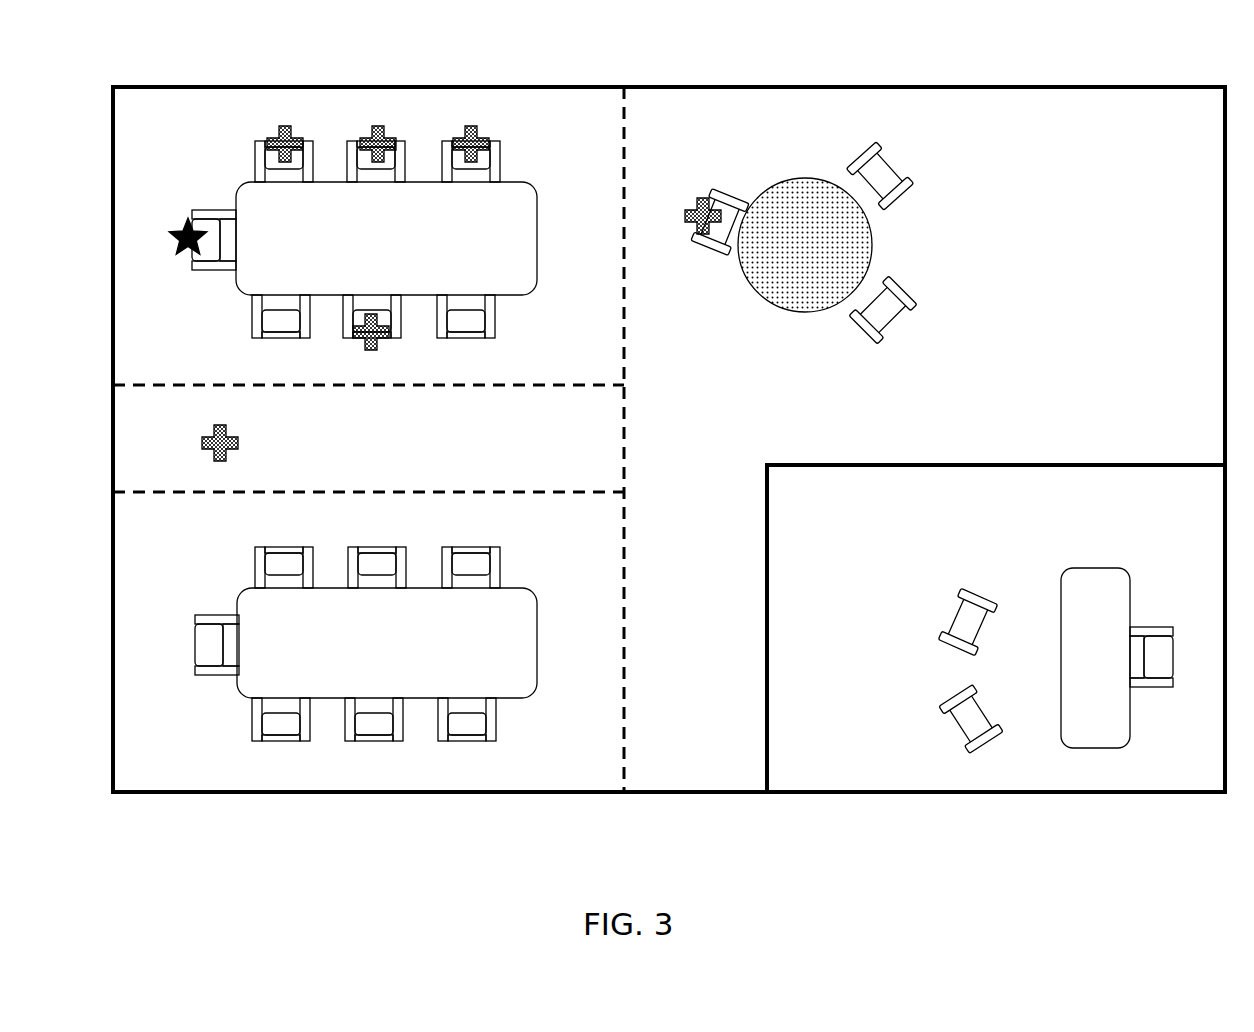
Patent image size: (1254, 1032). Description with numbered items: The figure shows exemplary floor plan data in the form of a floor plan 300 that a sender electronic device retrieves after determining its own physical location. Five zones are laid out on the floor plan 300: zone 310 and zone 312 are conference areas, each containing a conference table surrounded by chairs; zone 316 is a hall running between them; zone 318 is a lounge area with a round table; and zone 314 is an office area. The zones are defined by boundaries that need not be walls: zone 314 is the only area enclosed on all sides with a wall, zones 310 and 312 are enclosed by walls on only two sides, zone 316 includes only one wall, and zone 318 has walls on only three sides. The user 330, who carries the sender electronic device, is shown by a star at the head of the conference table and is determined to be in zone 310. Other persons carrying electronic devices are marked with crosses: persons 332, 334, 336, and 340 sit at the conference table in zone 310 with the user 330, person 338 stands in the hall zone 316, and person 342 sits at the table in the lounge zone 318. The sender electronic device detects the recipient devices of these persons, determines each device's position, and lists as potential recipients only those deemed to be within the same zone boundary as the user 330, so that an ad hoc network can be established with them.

The floor plan 300 is at (1044, 63).
The zone 310 is at (188, 363).
The zone 312 is at (182, 565).
The zone 314 is at (949, 552).
The zone 316 is at (334, 455).
The zone 318 is at (1018, 238).
The user 330 is at (186, 220).
The person 332 is at (284, 126).
The person 334 is at (377, 126).
The person 336 is at (471, 126).
The person 338 is at (219, 425).
The person 340 is at (372, 350).
The person 342 is at (704, 198).